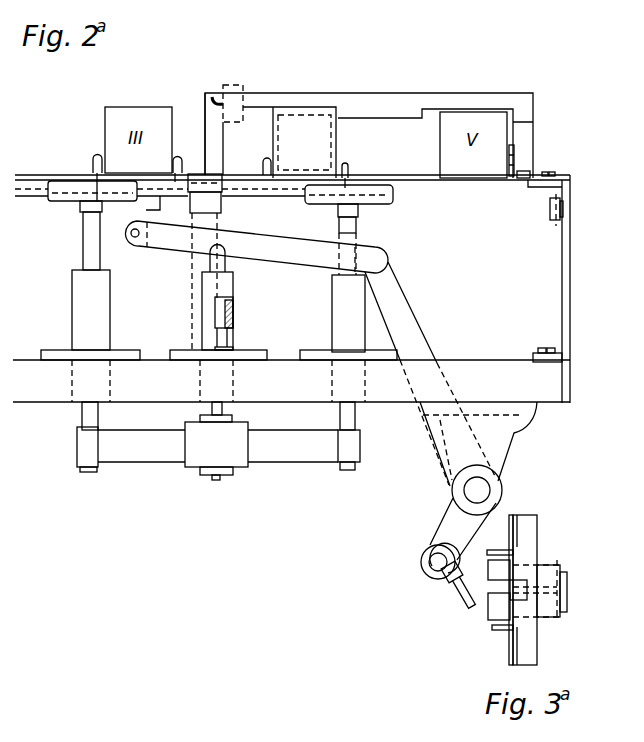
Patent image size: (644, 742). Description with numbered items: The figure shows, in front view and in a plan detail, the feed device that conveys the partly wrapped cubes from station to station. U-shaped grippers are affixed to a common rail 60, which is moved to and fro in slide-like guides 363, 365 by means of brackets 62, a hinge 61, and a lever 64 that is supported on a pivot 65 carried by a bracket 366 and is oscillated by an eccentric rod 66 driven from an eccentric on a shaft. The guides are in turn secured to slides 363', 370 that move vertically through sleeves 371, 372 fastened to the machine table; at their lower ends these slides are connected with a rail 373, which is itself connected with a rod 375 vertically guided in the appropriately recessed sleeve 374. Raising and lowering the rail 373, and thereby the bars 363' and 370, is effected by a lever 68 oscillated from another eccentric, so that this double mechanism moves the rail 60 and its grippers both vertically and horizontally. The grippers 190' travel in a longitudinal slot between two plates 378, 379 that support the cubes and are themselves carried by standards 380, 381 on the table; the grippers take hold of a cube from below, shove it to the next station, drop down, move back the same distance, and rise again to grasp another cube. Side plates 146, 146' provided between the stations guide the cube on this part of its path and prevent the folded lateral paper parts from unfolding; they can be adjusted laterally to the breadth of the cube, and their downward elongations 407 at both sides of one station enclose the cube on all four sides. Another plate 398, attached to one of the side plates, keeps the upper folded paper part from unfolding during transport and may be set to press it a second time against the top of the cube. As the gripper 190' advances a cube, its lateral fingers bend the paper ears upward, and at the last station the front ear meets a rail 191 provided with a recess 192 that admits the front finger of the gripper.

In FIG. 2A, the common rail 60 is at (257, 194).
In FIG. 2A, the hinge 61 is at (274, 254).
In FIG. 2A, the brackets 62 is at (184, 198).
In FIG. 2A, the lever 64 is at (418, 318).
In FIG. 2A, the pivot 65 is at (491, 488).
In FIG. 2A, the eccentric rod 66 is at (458, 598).
In FIG. 2A, the lever 68 is at (233, 312).
In FIG. 3A, the side plate 146 is at (498, 641).
In FIG. 2A, the side plate 146' is at (369, 125).
In FIG. 3A, the side plate 146' is at (497, 545).
In FIG. 2A, the U-shaped gripper 190' is at (314, 168).
In FIG. 2A, the rail 191 is at (516, 149).
In FIG. 3A, the rail 191 is at (538, 528).
In FIG. 2A, the recess 192 is at (498, 179).
In FIG. 3A, the recess 192 is at (518, 602).
In FIG. 2A, the slide-like guide 363 is at (91, 199).
In FIG. 2A, the slide 363' is at (72, 241).
In FIG. 2A, the slide-like guide 365 is at (393, 204).
In FIG. 2A, the bracket 366 is at (503, 438).
In FIG. 2A, the slide 370 is at (357, 229).
In FIG. 2A, the sleeve 371 is at (107, 294).
In FIG. 2A, the sleeve 372 is at (336, 298).
In FIG. 2A, the rail 373 is at (140, 457).
In FIG. 2A, the sleeve 374 is at (207, 306).
In FIG. 2A, the rod 375 is at (233, 408).
In FIG. 3A, the plate 378 is at (543, 567).
In FIG. 2A, the plate 379 is at (427, 182).
In FIG. 3A, the plate 379 is at (550, 610).
In FIG. 2A, the standard 380 is at (198, 263).
In FIG. 2A, the standard 381 is at (571, 268).
In FIG. 3A, the standard 381 is at (568, 593).
In FIG. 2A, the plate 398 is at (262, 106).
In FIG. 2A, the elongations 407 is at (331, 140).